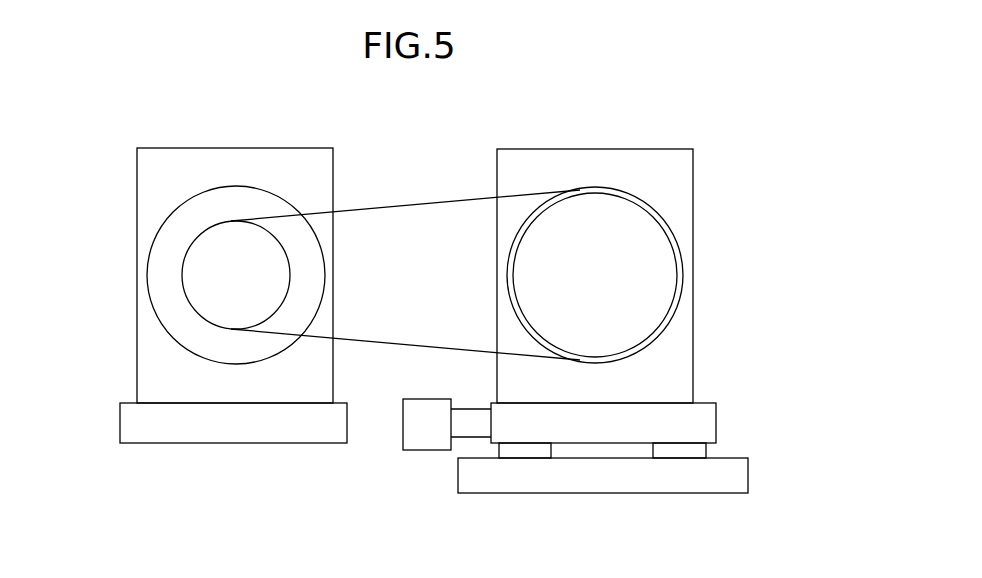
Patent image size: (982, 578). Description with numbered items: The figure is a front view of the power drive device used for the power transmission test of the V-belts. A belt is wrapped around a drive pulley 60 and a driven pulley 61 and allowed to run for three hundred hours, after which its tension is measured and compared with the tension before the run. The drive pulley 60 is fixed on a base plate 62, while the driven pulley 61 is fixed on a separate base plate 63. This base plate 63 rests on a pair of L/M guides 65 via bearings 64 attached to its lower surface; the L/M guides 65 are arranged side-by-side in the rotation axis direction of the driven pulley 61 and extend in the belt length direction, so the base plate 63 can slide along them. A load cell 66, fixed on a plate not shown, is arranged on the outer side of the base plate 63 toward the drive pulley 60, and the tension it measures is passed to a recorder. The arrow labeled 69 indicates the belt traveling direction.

The drive pulley 60 is at (237, 197).
The driven pulley 61 is at (608, 212).
The base plate 62 is at (132, 420).
The base plate 63 is at (705, 421).
The bearings 64 is at (533, 453).
The L/M guides 65 is at (735, 477).
The load cell 66 is at (422, 440).
The belt 69 is at (440, 188).